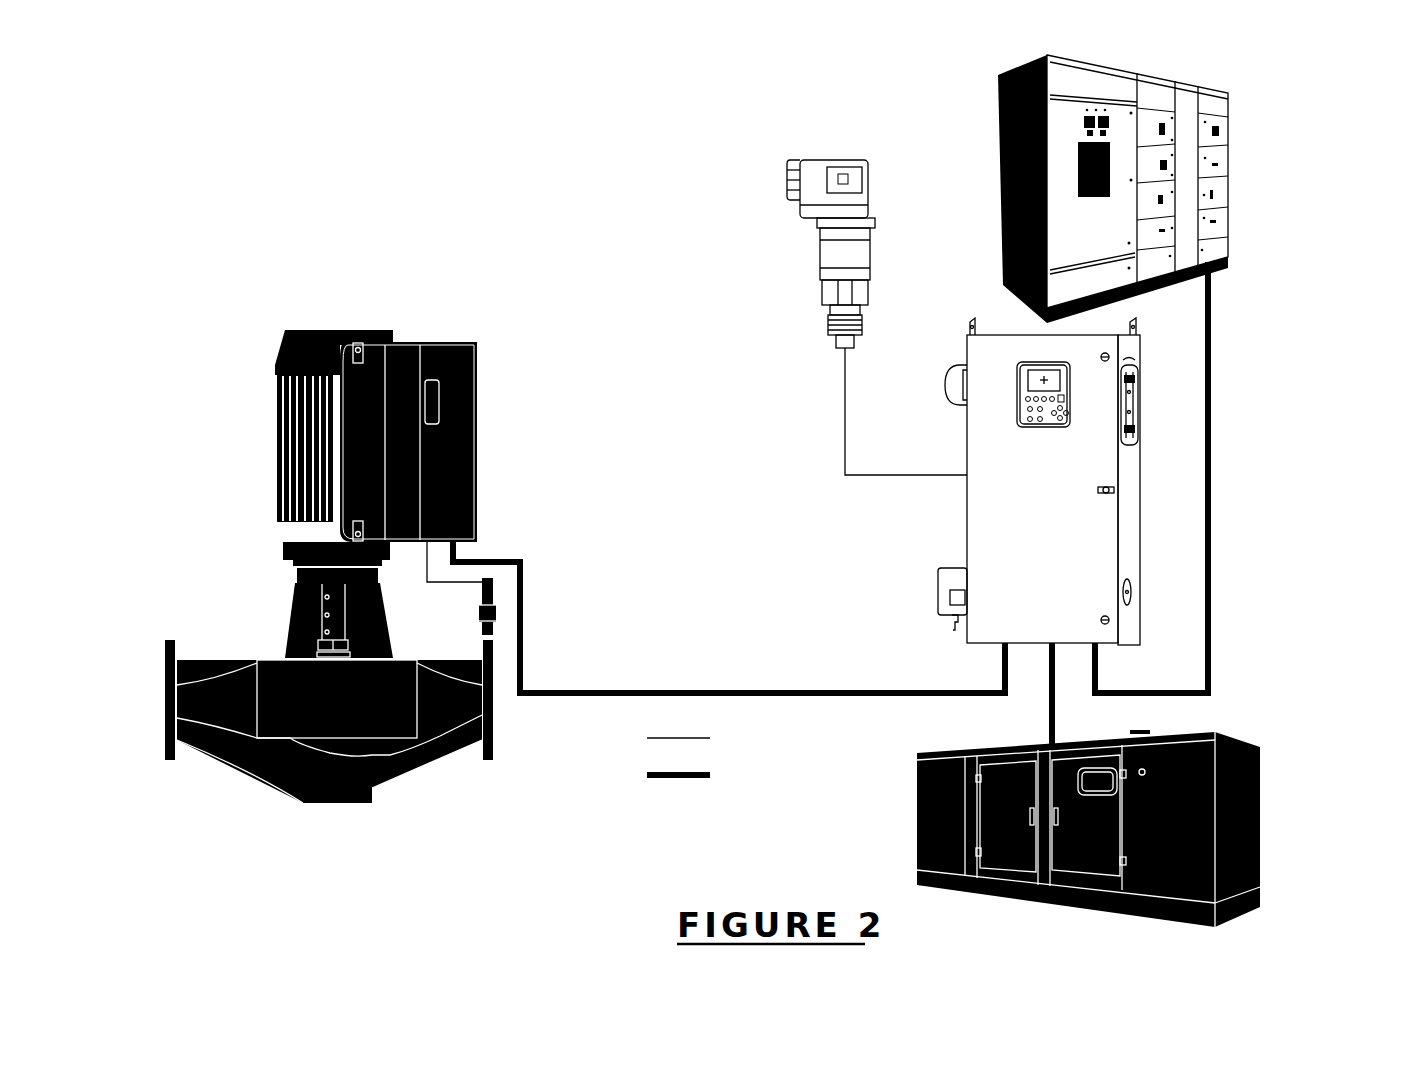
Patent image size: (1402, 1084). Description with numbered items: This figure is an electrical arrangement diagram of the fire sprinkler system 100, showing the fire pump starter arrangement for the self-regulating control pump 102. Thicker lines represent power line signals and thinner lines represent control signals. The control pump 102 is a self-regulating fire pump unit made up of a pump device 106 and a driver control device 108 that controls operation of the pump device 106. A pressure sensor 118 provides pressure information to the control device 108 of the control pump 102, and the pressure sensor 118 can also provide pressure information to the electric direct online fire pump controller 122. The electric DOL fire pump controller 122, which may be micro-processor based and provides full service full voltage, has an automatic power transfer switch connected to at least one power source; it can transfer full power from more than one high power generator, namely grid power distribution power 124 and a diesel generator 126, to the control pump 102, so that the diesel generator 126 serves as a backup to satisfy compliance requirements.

The fire sprinkler system 100 is at (285, 156).
The control pump 102 is at (217, 315).
The pump device 106 is at (386, 783).
The driver control device 108 is at (453, 330).
The pressure sensor 118 is at (501, 626).
The electric direct online (DOL) fire pump controller 122 is at (967, 521).
The grid power distribution power 124 is at (1165, 75).
The diesel generator 126 is at (1262, 850).